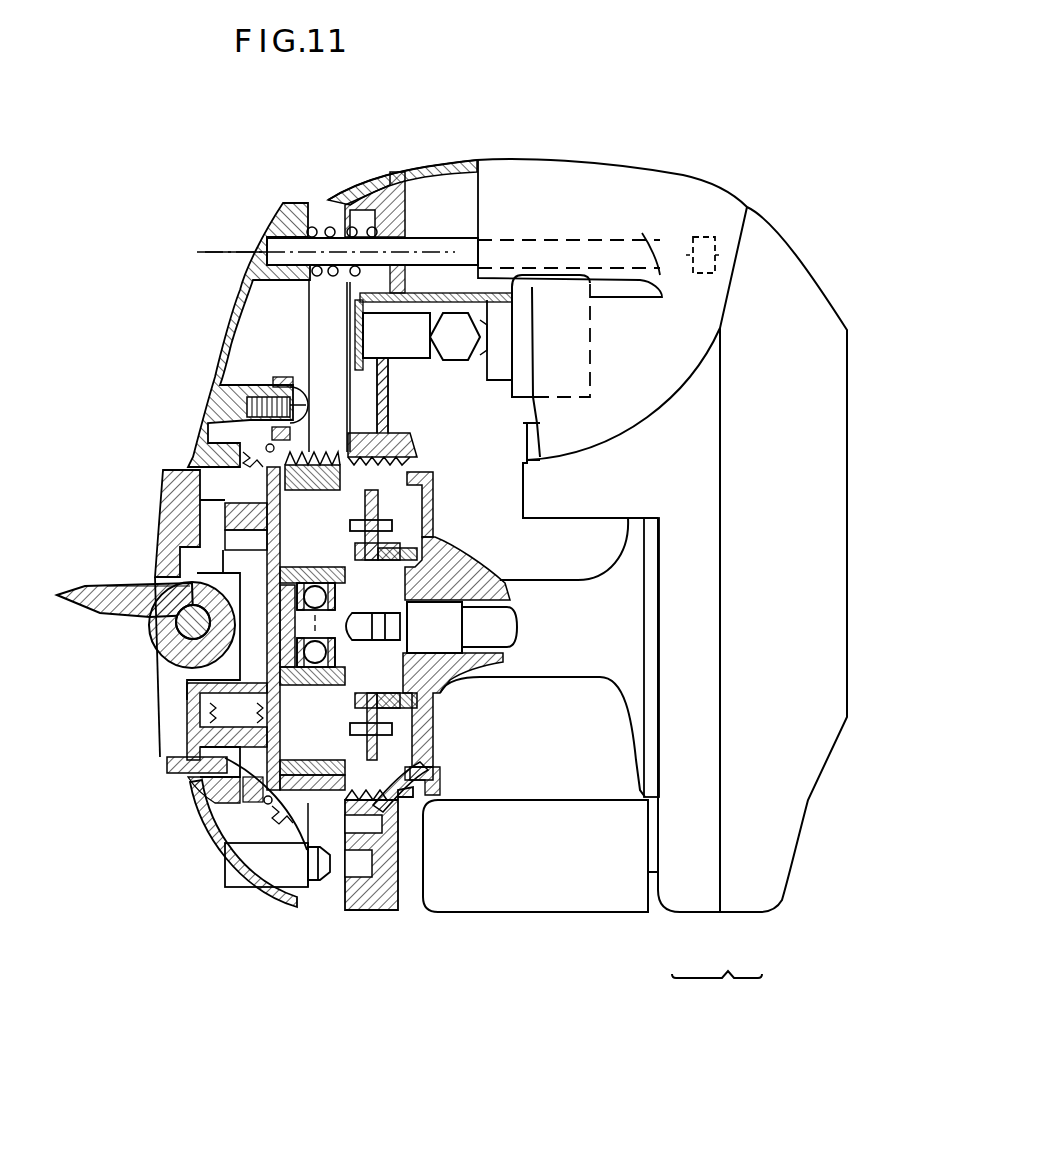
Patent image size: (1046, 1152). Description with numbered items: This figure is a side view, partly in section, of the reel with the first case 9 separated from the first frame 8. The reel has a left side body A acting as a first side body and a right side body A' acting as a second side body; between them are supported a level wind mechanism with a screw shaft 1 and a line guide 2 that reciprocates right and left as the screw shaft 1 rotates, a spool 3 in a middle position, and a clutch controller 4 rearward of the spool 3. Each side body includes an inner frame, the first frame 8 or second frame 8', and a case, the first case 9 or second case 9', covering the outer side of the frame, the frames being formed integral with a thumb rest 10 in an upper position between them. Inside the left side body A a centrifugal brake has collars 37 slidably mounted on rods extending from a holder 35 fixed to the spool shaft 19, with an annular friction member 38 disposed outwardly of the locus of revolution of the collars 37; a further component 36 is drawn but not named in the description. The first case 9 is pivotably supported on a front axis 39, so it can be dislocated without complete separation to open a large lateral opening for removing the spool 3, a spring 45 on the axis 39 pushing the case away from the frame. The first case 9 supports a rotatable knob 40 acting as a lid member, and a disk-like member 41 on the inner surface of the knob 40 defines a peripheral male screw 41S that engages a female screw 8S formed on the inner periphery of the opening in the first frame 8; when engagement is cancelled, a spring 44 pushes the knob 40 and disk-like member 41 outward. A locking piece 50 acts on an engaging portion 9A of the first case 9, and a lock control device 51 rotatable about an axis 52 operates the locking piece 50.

The screw shaft 1 is at (415, 350).
The line guide 2 is at (517, 385).
The spool 3 is at (610, 687).
The clutch controller 4 is at (463, 903).
The first frame 8 is at (587, 510).
The female screw 8S is at (432, 768).
The second frame 8' is at (681, 748).
The first case 9 is at (249, 310).
The engaging portion 9A is at (213, 790).
The second case 9' is at (742, 748).
The thumb rest 10 is at (570, 508).
The spool shaft 19 is at (498, 635).
The holder 35 is at (442, 707).
The lower pin 36 is at (423, 537).
The collars 37 is at (390, 503).
The annular friction member 38 is at (312, 490).
The front axis 39 is at (443, 244).
The knob 40 is at (157, 500).
The disk-like member 41 is at (283, 697).
The male screw 41S is at (273, 850).
The spring 44 is at (266, 804).
The spring 45 is at (327, 226).
The locking piece 50 is at (212, 515).
The lock control device 51 is at (102, 583).
The axis 52 is at (160, 653).
The left side body A is at (211, 219).
The right side body A' is at (717, 995).